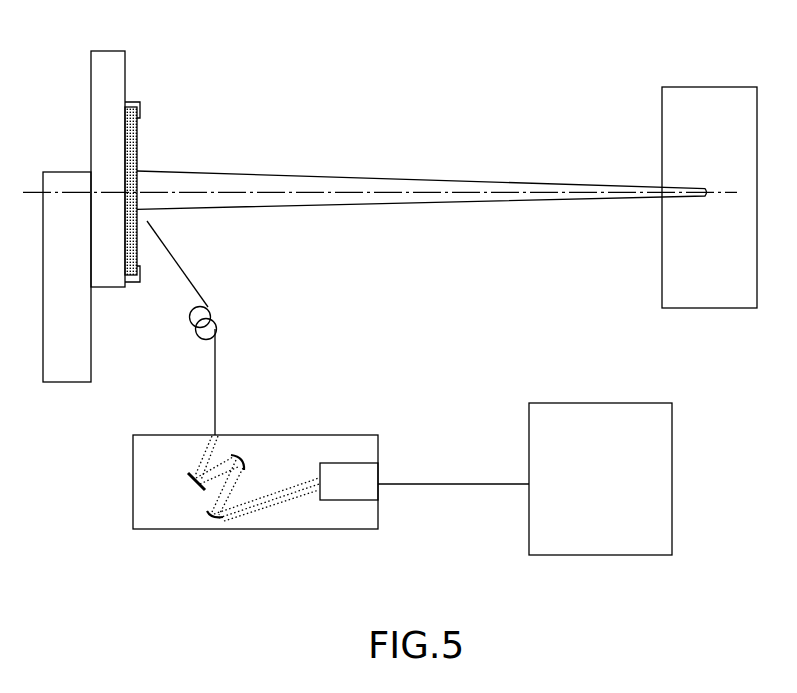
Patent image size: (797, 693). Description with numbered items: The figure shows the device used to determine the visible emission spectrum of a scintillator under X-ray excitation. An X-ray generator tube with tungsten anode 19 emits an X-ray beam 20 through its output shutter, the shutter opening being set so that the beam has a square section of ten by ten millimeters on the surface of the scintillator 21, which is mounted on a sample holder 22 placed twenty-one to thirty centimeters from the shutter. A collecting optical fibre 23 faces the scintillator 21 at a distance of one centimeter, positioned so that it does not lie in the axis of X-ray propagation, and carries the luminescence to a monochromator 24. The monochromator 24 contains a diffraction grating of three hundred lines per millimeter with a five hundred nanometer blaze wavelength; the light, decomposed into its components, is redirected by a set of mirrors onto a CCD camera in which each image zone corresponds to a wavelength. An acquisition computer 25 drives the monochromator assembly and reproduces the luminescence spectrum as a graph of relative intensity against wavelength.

The X-ray generator tube with tungsten anode 19 is at (673, 113).
The X-ray beam 20 is at (450, 180).
The scintillator 21 is at (140, 134).
The sample holder 22 is at (103, 72).
The collecting optical fibre 23 is at (210, 307).
The monochromator 24 is at (140, 498).
The acquisition computer 25 is at (653, 497).